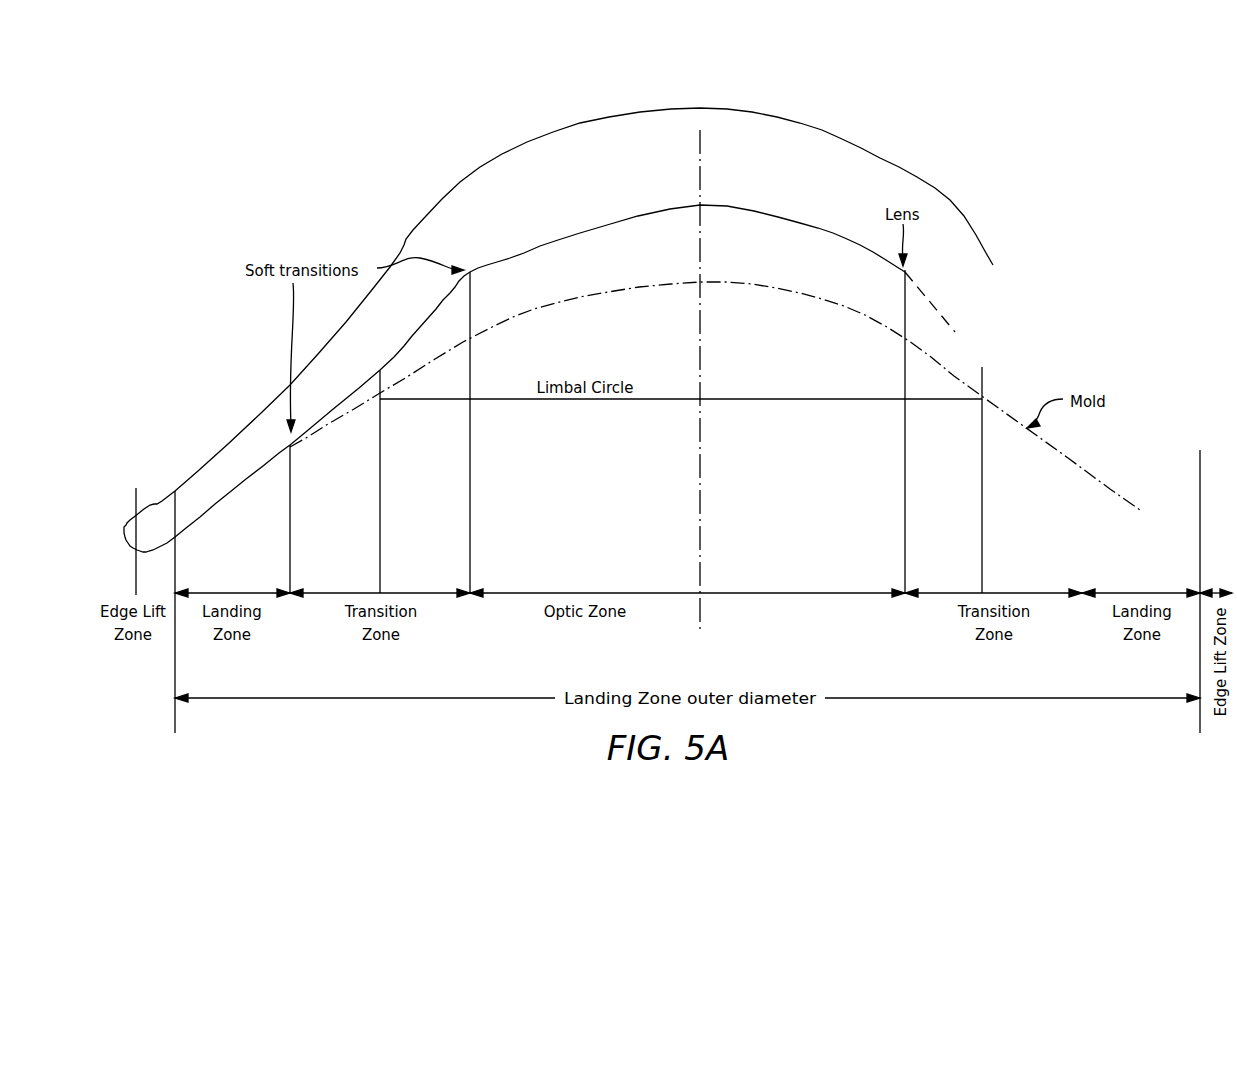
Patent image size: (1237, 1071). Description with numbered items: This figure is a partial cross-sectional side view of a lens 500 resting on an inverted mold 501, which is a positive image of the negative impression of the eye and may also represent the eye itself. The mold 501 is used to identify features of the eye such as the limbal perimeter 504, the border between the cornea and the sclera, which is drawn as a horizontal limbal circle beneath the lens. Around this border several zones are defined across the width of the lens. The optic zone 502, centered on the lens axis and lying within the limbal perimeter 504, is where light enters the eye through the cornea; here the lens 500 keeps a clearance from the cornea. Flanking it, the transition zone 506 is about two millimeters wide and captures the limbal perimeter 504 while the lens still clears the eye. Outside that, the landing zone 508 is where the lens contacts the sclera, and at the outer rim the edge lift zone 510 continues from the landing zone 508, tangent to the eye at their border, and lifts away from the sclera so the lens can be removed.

The lens 500 is at (880, 158).
The mold 501 is at (953, 372).
The optic zone 502 is at (585, 622).
The limbal perimeter 504 is at (585, 400).
The transition zone 506 is at (380, 645).
The landing zone 508 is at (233, 645).
The edge lift zone 510 is at (135, 647).